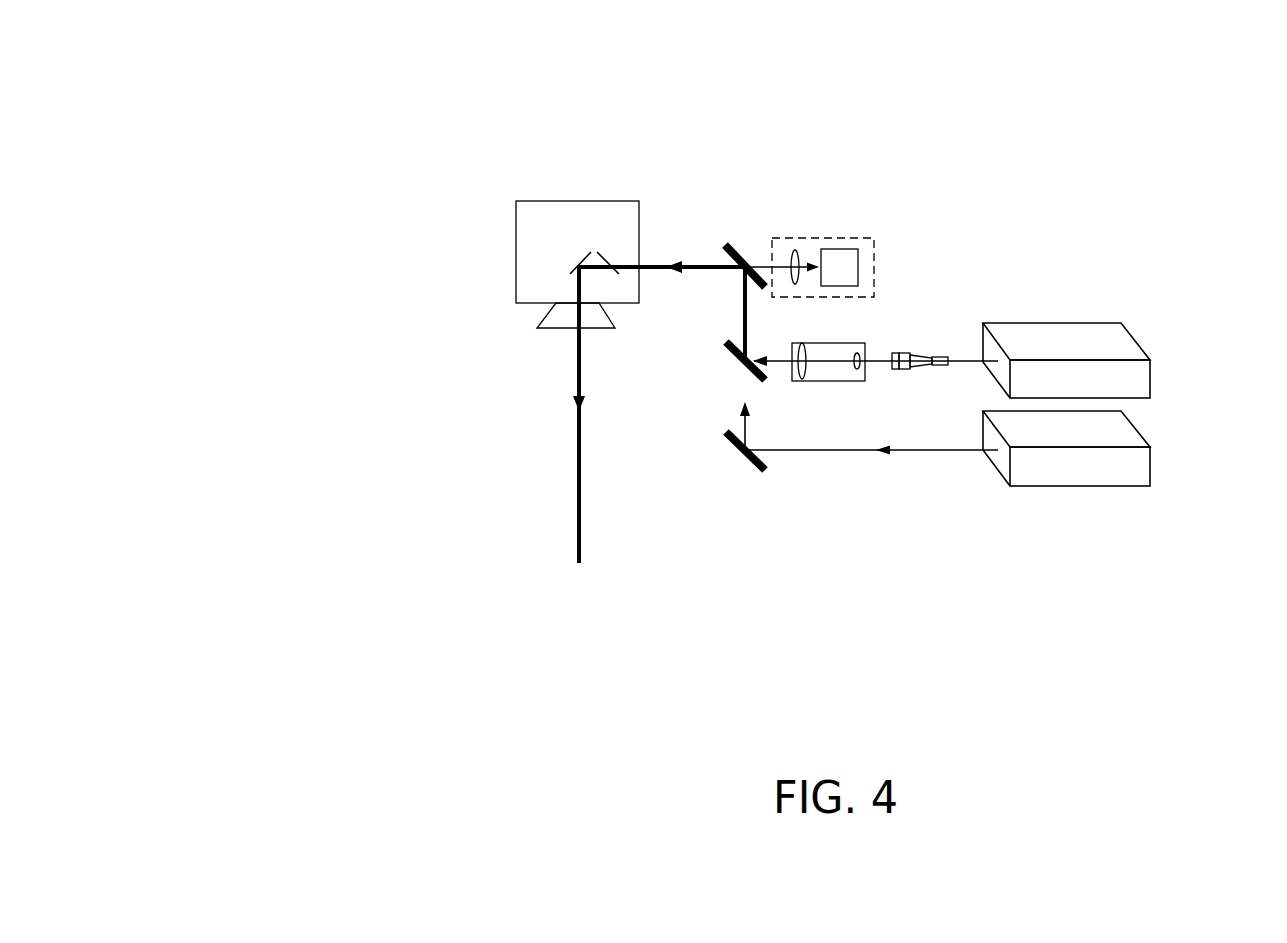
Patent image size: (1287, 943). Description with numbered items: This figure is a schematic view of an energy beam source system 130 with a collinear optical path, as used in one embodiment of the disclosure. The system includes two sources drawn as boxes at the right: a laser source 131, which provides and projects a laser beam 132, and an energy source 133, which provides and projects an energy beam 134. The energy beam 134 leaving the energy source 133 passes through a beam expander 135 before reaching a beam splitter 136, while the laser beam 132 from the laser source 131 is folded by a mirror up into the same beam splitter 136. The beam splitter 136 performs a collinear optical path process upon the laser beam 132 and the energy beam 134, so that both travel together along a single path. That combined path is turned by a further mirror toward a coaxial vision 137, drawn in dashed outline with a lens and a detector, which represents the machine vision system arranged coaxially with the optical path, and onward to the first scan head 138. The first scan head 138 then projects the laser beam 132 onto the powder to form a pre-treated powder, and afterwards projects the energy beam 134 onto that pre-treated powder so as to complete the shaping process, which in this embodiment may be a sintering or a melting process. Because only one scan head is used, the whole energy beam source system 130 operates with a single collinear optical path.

The energy beam source system 130 is at (372, 95).
The laser source 131 is at (1119, 432).
The laser beam 132 is at (805, 448).
The energy source 133 is at (1119, 343).
The energy beam 134 is at (877, 365).
The beam expander 135 is at (830, 343).
The beam splitter 136 is at (728, 351).
The coaxial vision 137 is at (823, 235).
The first scan head 138 is at (515, 250).